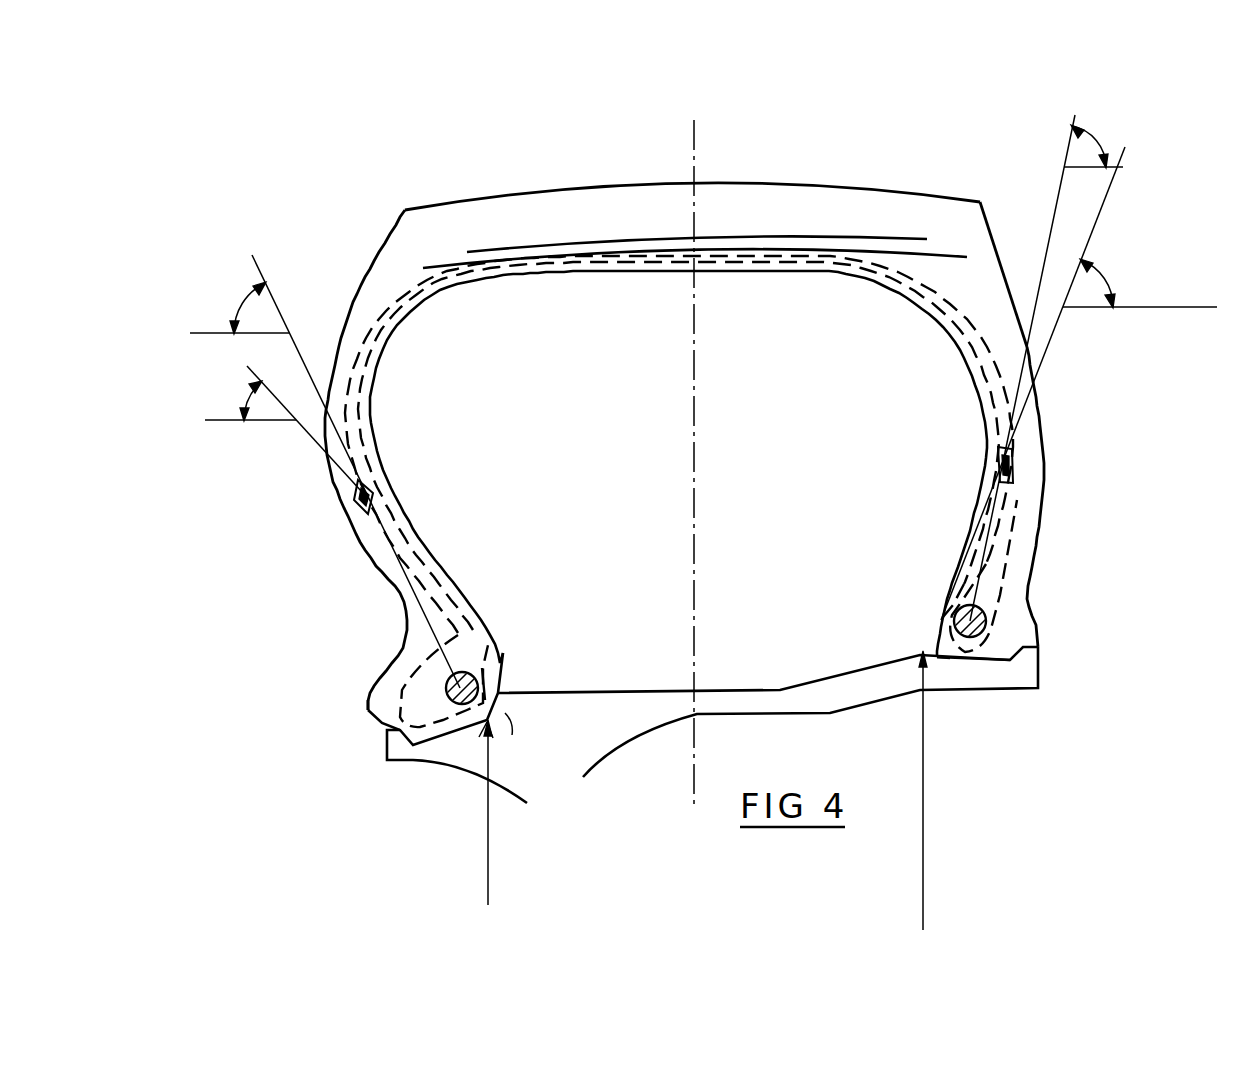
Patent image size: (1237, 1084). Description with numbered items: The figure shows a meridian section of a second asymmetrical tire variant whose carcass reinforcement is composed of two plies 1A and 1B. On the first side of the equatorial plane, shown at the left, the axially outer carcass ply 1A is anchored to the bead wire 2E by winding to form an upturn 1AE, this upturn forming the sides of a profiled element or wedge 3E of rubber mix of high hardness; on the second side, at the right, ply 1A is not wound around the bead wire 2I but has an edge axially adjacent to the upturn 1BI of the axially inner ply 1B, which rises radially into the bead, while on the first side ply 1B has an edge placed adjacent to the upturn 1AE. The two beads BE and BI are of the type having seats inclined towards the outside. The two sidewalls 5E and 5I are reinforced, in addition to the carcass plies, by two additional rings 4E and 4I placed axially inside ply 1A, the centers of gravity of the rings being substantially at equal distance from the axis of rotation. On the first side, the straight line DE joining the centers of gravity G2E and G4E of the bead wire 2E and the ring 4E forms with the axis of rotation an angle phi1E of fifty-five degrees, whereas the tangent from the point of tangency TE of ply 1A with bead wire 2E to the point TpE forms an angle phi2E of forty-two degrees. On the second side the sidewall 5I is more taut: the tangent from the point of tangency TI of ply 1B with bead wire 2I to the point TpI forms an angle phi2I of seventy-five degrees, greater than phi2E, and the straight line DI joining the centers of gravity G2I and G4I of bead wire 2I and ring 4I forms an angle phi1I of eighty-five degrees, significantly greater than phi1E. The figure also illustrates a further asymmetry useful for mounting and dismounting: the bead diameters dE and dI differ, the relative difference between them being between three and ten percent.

The axially outer carcass ply 1A is at (407, 310).
The axially inner carcass ply 1B is at (367, 397).
The sidewall (first side) 5E is at (352, 518).
The sidewall (second side) 5I is at (1033, 452).
The additional ring (first side) 4E is at (368, 488).
The center of gravity of ring 4E G4E is at (377, 497).
The additional ring (second side) 4I is at (1003, 465).
The center of gravity of ring 4I G4I is at (1010, 470).
The center of gravity of bead wire 2E G2E is at (449, 675).
The center of gravity of bead wire 2I G2I is at (940, 617).
The upturn of ply 1A 1AE is at (482, 626).
The point of tangency (first side) TE is at (497, 660).
The upturn of ply 1B 1BI is at (1010, 560).
The point of tangency (second side) TI is at (945, 593).
The bead (first side) BE is at (388, 665).
The bead (second side) BI is at (1040, 617).
The profiled element or wedge 3E is at (420, 717).
The bead wire (first side) 2E is at (513, 736).
The bead wire (second side) 2I is at (966, 640).
The bead diameter (first side) dE is at (507, 812).
The bead diameter (second side) dI is at (943, 790).
The straight line joining G2E and G4E DE is at (356, 460).
The tangent line end point T'E TpE is at (304, 416).
The straight line joining G2I and G4I DI is at (1022, 340).
The tangent line end point T'I TpI is at (1043, 383).
The angle phi1E is at (239, 303).
The angle phi2E is at (243, 404).
The angle phi1I is at (1101, 125).
The angle phi2I is at (1140, 283).